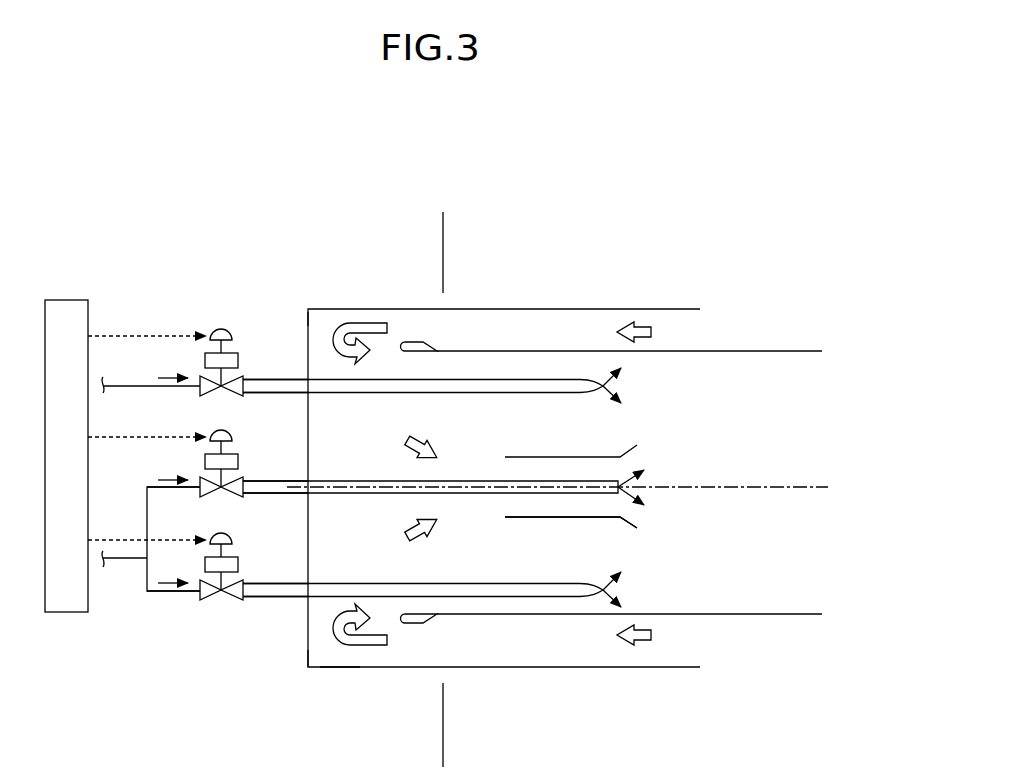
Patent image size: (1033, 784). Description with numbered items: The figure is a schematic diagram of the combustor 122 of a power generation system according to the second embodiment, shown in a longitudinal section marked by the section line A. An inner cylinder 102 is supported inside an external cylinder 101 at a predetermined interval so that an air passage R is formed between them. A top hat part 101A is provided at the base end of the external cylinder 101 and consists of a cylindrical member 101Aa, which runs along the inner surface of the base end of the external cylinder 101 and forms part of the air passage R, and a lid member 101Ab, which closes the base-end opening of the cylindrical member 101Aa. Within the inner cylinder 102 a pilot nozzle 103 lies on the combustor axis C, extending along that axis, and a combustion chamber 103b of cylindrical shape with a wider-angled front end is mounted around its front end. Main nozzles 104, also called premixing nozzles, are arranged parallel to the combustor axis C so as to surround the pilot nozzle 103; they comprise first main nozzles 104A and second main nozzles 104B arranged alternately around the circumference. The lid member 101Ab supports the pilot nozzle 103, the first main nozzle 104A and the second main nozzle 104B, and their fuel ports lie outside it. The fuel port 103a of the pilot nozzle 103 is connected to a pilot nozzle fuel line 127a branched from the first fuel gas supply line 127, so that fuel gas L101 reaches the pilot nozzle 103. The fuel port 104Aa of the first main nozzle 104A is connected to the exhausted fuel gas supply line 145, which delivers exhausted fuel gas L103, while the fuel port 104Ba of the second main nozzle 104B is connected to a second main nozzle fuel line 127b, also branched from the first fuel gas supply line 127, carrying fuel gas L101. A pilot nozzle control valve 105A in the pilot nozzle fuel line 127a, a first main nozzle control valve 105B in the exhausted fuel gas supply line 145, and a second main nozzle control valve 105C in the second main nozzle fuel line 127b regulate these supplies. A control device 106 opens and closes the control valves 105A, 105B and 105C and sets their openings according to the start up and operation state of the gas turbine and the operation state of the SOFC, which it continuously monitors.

The combustor 122 is at (601, 195).
The external cylinder 101 is at (480, 308).
The top hat part 101A is at (308, 655).
The cylindrical member 101Aa is at (337, 669).
The lid member 101Ab is at (308, 319).
The inner cylinder 102 is at (740, 351).
The pilot nozzle 103 is at (598, 481).
The fuel port 103a is at (280, 480).
The combustion chamber 103b is at (613, 517).
The main nozzles 104 is at (436, 491).
The first main nozzle 104A is at (548, 379).
The fuel port 104Aa is at (280, 377).
The second main nozzle 104B is at (558, 597).
The fuel port 104Ba is at (280, 598).
The pilot nozzle control valve 105A is at (222, 431).
The first main nozzle control valve 105B is at (220, 330).
The second main nozzle control valve 105C is at (222, 535).
The control device 106 is at (65, 300).
The first fuel gas supply line 127 is at (122, 559).
The pilot nozzle fuel line 127a is at (147, 486).
The second main nozzle fuel line 127b is at (150, 593).
The exhausted fuel gas supply line 145 is at (122, 377).
The fuel gas L101 is at (172, 480).
The exhausted fuel gas L103 is at (172, 377).
The air passage R is at (662, 330).
The combustor axis C is at (763, 486).
The section line A is at (440, 229).